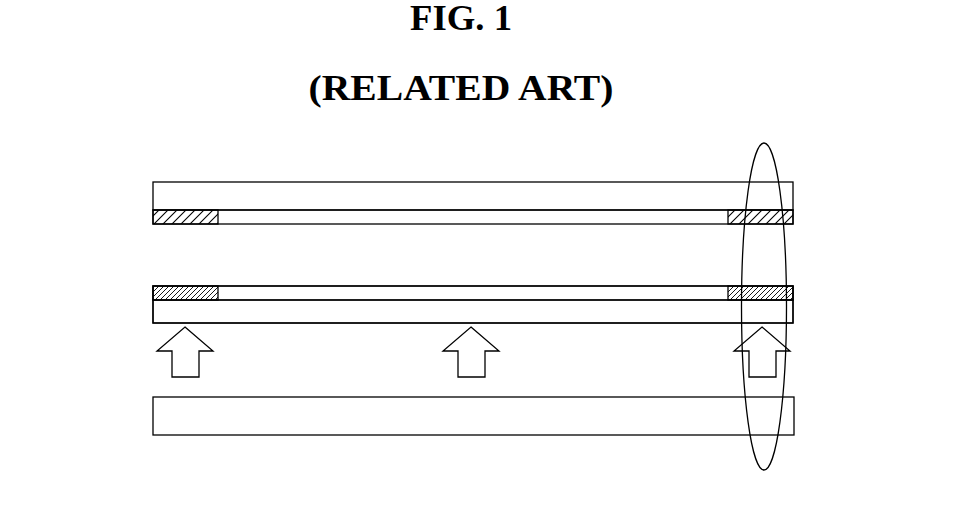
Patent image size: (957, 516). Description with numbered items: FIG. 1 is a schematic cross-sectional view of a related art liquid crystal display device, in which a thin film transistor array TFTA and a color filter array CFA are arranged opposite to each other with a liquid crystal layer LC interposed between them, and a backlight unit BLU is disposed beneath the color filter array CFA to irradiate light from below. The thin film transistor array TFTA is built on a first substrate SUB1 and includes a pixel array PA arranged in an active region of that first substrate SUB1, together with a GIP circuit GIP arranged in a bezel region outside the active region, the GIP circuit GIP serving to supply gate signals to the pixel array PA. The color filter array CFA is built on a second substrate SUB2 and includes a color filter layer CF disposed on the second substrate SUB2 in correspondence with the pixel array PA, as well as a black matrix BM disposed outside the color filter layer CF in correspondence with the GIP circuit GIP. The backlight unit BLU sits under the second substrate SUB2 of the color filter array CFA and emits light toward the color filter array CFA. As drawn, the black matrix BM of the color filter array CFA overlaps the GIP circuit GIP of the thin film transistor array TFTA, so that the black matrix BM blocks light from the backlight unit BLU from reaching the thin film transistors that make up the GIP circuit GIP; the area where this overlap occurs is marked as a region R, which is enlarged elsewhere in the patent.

The first substrate SUB1 is at (790, 190).
The thin film transistor array TFTA is at (140, 204).
The GIP circuit GIP is at (153, 213).
The pixel array PA is at (297, 218).
The color filter array CFA is at (140, 305).
The color filter layer CF is at (296, 292).
The second substrate SUB2 is at (793, 313).
The black matrix BM is at (153, 293).
The liquid crystal layer LC is at (473, 256).
The backlight unit BLU is at (140, 417).
The region R is at (786, 255).